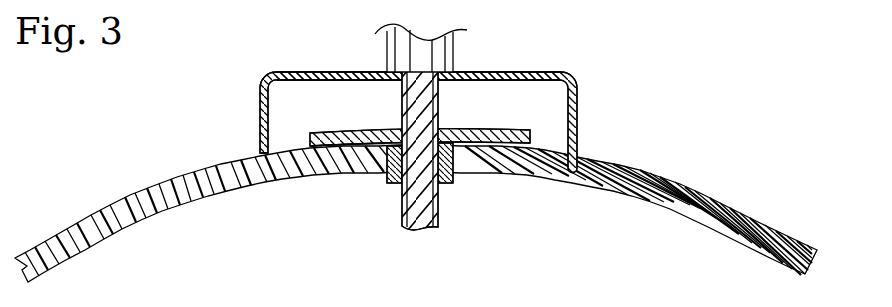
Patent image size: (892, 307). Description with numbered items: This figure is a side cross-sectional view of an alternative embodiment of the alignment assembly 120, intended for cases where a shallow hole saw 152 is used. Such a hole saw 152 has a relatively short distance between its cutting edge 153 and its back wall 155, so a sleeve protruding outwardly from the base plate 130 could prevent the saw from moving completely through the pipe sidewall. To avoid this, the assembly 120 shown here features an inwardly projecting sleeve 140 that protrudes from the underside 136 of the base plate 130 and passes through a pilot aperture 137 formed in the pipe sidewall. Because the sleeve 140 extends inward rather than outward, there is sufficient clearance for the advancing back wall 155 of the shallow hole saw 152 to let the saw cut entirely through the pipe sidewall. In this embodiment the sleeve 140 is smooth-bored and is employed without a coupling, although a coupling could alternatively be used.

The alignment assembly 120 is at (376, 106).
The base plate 130 is at (341, 131).
The underside of the base plate 136 is at (330, 150).
The pilot aperture 137 is at (388, 168).
The sleeve 140 is at (453, 180).
The hole saw 152 is at (454, 106).
The cutting edge 153 is at (582, 176).
The back wall 155 is at (513, 73).